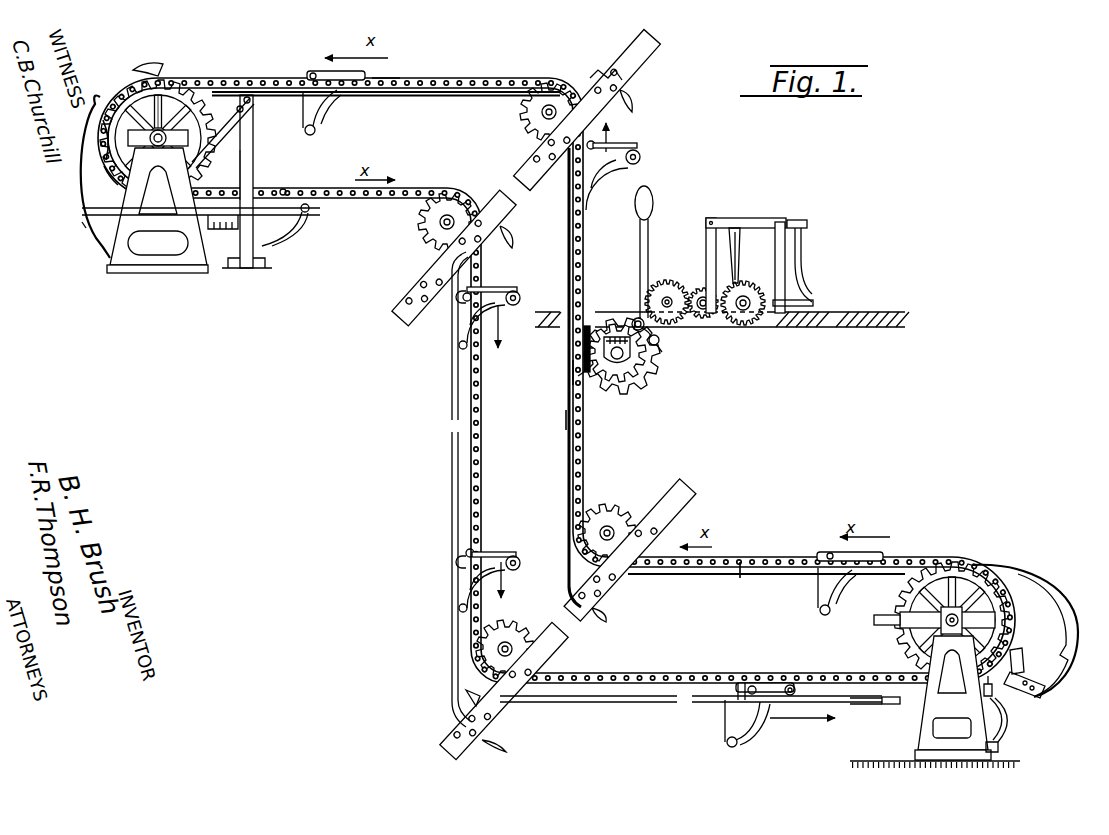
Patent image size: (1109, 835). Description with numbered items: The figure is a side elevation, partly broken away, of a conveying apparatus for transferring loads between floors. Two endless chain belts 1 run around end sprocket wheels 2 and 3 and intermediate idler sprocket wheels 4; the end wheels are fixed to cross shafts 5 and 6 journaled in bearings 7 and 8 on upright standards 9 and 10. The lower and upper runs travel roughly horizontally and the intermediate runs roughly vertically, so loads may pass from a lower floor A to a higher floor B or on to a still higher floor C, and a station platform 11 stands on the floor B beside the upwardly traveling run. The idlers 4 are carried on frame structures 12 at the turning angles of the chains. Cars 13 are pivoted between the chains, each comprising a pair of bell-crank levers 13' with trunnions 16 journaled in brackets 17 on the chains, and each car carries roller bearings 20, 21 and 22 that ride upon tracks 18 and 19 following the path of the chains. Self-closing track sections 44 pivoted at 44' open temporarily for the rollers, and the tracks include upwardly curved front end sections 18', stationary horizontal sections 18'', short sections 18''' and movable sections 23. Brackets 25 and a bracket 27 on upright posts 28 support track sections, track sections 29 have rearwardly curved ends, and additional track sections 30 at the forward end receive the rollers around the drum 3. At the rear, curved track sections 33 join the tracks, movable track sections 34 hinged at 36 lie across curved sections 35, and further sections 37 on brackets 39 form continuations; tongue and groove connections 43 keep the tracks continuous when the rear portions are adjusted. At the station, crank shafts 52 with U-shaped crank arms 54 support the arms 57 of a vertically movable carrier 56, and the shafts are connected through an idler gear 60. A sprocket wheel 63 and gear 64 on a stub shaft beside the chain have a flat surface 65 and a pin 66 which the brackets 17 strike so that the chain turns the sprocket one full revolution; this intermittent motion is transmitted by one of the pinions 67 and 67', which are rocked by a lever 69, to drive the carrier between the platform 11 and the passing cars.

The endless chain belts 1 is at (377, 86).
The end sprocket wheel 2 is at (900, 590).
The end sprocket wheel 3 is at (130, 88).
The intermediate idler sprocket wheels 4 is at (520, 108).
The cross shaft 5 is at (955, 605).
The cross shaft 6 is at (160, 130).
The bearings 7 is at (956, 632).
The bearings 8 is at (150, 150).
The upright standard 9 is at (922, 716).
The upright standard 10 is at (125, 226).
The station platform 11 is at (719, 226).
The frame structures 12 is at (400, 322).
The cars 13 is at (565, 362).
The bell-crank levers 13' is at (559, 417).
The pivotal trunnions 16 is at (315, 73).
The brackets 17 is at (336, 72).
The track 18 is at (493, 412).
The upwardly curved front end sections 18' is at (158, 230).
The stationary horizontal track sections 18'' is at (104, 187).
The short track sections 18''' is at (525, 237).
The track 19 is at (385, 90).
The roller bearings 20 is at (459, 308).
The roller bearings 21 is at (305, 130).
The roller bearings 22 is at (641, 157).
The movable track sections 23 is at (150, 56).
The brackets 25 is at (104, 130).
The bracket 27 is at (228, 122).
The upright posts 28 is at (242, 170).
The track sections 29 is at (148, 111).
The additional track sections 30 is at (80, 202).
The curved track sections 33 is at (1070, 612).
The movable track sections 34 is at (1008, 710).
The curved track sections 35 is at (998, 744).
The hinge 36 is at (984, 688).
The additional track sections 37 is at (1030, 660).
The brackets 39 is at (1035, 692).
The tongue and groove connections 43 is at (888, 704).
The self-closing track sections 44 is at (587, 110).
The pivot 44' is at (612, 82).
The crank shafts 52 is at (670, 296).
The U-shaped crank arms 54 is at (796, 312).
The vertically movable carrier 56 is at (807, 232).
The downwardly projecting arms 57 is at (740, 254).
The idler gear 60 is at (703, 320).
The sprocket wheel 63 is at (652, 366).
The gear 64 is at (617, 388).
The flat surface 65 is at (576, 372).
The stud or pin 66 is at (590, 340).
The pinion 67 is at (646, 309).
The pinion 67' is at (666, 344).
The lever 69 is at (652, 208).
The floor A is at (870, 764).
The floor B is at (850, 327).
The floor C is at (212, 282).